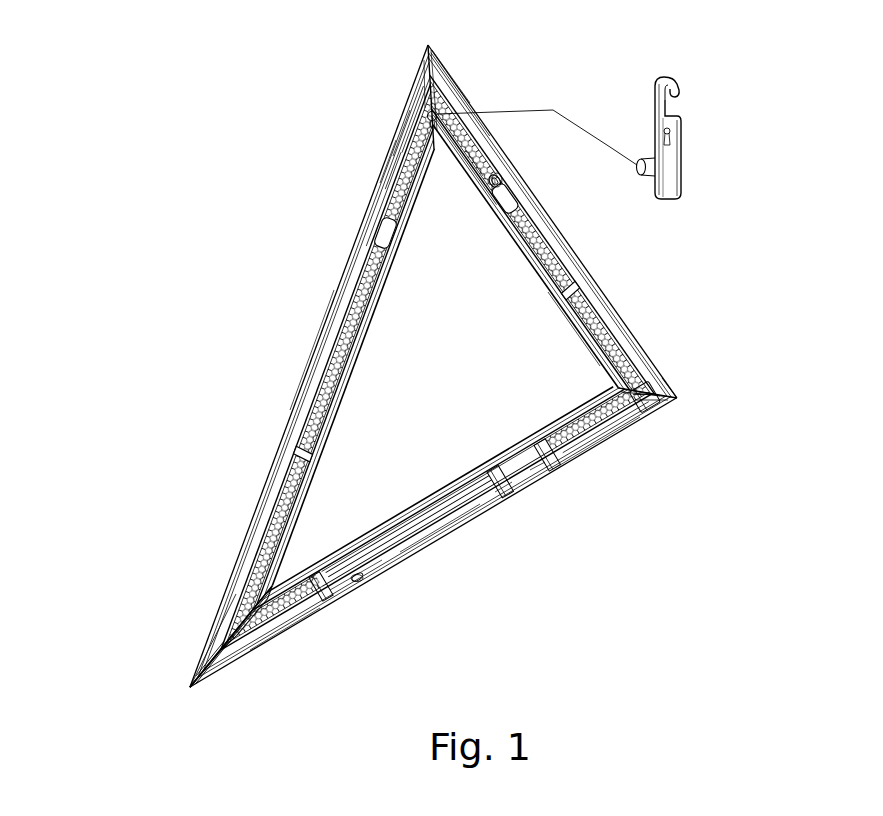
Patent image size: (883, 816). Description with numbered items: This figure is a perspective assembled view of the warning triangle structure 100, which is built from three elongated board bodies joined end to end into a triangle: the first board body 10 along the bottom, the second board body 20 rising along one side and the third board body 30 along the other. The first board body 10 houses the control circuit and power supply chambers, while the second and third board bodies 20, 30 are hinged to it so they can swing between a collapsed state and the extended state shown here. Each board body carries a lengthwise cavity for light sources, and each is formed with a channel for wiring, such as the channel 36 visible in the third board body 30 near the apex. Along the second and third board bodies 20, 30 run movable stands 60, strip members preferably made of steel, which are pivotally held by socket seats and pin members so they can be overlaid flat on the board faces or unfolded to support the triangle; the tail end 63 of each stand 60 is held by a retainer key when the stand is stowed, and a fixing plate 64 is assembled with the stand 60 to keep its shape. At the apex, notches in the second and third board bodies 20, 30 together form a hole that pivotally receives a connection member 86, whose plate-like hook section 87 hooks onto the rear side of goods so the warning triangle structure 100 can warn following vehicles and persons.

The warning triangle structure 100 is at (252, 208).
The first board body 10 is at (581, 490).
The second board body 20 is at (296, 355).
The third board body 30 is at (628, 262).
The channel 36 is at (437, 115).
The movable stand 60 is at (558, 219).
The tail end 63 is at (372, 225).
The fixing plate 64 is at (610, 304).
The connection member 86 is at (697, 153).
The hook section 87 is at (679, 83).